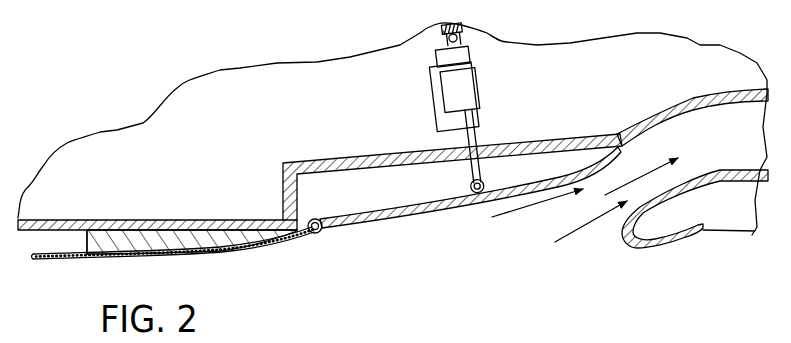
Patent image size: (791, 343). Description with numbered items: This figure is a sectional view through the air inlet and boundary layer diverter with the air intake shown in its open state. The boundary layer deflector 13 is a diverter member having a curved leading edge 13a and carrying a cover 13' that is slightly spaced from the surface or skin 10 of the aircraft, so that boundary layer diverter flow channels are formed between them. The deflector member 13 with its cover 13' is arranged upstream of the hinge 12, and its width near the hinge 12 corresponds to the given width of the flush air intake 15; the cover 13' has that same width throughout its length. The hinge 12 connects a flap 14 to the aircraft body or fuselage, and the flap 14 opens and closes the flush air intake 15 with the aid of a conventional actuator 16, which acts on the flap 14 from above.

The skin 10 is at (48, 210).
The hinge 12 is at (318, 233).
The boundary layer deflector 13 is at (192, 194).
The curved leading edge 13a is at (87, 247).
The cover 13' is at (173, 260).
The flap 14 is at (558, 189).
The flush air intake 15 is at (726, 151).
The actuator 16 is at (468, 83).